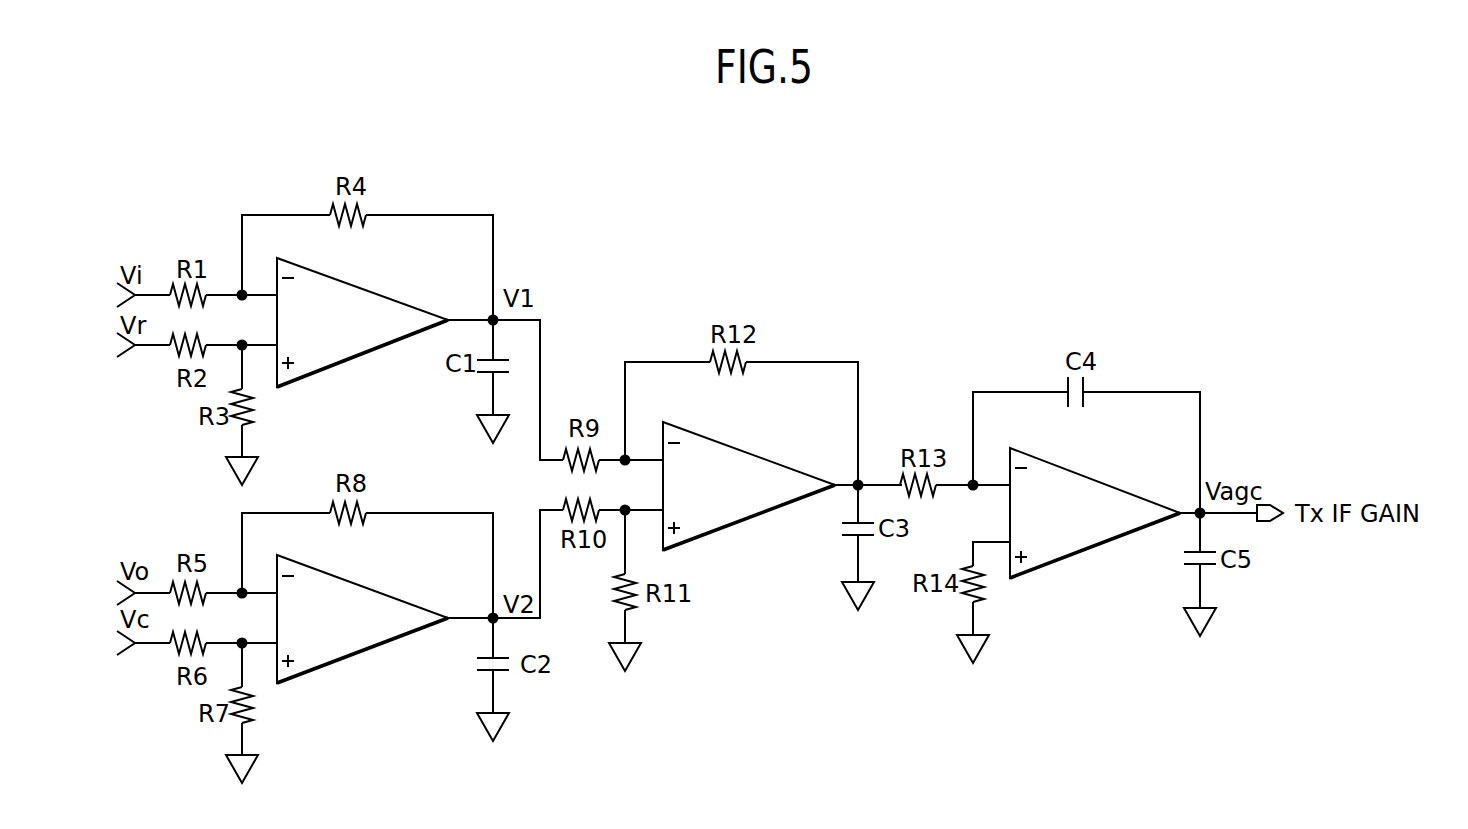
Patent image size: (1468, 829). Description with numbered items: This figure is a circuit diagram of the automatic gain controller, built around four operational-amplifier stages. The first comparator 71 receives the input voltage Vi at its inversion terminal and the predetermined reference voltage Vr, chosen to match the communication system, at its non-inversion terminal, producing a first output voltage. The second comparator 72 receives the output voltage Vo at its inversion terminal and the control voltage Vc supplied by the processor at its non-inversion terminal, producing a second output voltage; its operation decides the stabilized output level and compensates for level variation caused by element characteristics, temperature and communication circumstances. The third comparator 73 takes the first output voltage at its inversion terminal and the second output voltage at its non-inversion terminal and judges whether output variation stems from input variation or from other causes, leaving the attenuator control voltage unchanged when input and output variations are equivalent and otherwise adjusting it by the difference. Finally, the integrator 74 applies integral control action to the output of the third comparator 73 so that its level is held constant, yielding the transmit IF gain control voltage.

The first comparator 71 is at (348, 295).
The second comparator 72 is at (348, 592).
The third comparator 73 is at (733, 457).
The integrator 74 is at (1078, 485).